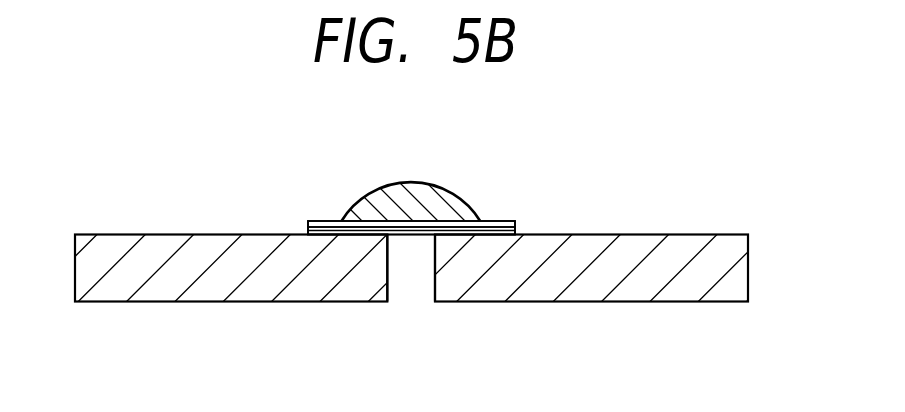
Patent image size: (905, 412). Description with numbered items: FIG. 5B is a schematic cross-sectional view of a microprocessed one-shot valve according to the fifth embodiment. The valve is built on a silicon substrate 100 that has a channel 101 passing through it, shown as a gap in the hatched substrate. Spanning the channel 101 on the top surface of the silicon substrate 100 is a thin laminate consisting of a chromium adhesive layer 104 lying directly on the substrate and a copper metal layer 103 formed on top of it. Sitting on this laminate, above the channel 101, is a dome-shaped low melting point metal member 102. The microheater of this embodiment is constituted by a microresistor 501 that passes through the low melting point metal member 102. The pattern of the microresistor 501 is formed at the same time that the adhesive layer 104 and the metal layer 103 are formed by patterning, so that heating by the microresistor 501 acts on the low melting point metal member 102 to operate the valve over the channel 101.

The silicon substrate 100 is at (678, 245).
The channel 101 is at (412, 295).
The low melting point metal member 102 is at (425, 192).
The metal layer 103 is at (307, 224).
The adhesive layer 104 is at (308, 230).
The microresistor 501 is at (508, 220).